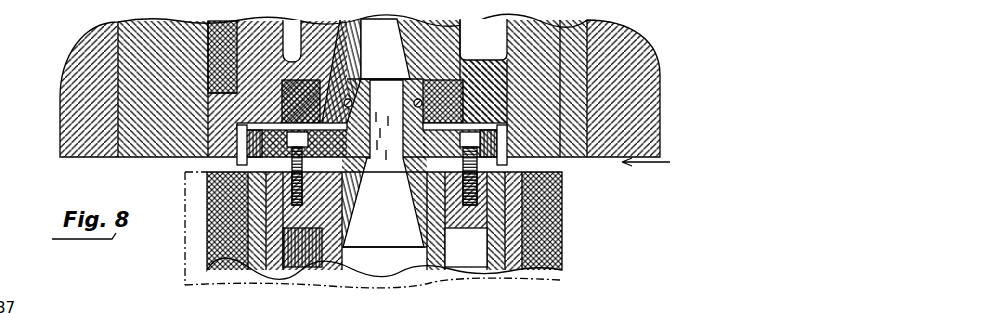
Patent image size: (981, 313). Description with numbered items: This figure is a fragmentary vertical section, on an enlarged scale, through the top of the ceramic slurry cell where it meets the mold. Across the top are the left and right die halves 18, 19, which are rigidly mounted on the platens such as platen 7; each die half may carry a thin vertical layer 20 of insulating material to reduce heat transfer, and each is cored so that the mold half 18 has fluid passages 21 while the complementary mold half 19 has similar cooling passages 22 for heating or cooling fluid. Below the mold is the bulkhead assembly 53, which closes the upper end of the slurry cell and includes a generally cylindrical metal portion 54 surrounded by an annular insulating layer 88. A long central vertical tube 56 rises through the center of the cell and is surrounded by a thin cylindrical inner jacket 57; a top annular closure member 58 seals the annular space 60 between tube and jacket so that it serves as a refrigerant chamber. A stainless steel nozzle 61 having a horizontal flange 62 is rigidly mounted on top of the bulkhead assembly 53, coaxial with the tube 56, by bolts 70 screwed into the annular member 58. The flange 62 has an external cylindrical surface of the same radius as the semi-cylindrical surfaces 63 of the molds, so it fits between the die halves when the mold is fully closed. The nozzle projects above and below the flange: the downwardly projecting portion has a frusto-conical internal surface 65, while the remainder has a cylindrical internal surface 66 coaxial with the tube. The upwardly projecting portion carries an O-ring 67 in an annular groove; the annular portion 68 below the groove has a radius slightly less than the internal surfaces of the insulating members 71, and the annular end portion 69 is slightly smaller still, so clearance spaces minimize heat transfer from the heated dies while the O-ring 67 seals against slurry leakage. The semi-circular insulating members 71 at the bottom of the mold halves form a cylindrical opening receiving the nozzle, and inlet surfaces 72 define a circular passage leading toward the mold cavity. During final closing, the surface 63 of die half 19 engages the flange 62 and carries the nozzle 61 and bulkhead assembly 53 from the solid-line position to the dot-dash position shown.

The platen 7 is at (68, 64).
The left die half 18 is at (247, 48).
The right die half 19 is at (528, 60).
The vertical layer of insulating material 20 is at (207, 67).
The fluid passages 21 is at (292, 46).
The cooling passages 22 is at (472, 49).
The bulkhead assembly 53 is at (182, 203).
The cylindrical metal portion 54 is at (238, 272).
The central vertical tube 56 is at (440, 272).
The inner jacket 57 is at (497, 273).
The top annular closure member 58 is at (466, 247).
The annular space 60 is at (310, 272).
The nozzle 61 is at (443, 128).
The horizontal flange 62 is at (503, 163).
The semi-cylindrical surfaces 63 is at (240, 135).
The frusto-conical internal surface 65 is at (384, 209).
The cylindrical internal surface 66 is at (384, 163).
The O-ring 67 is at (443, 101).
The annular portion of the nozzle 68 is at (301, 101).
The annular end portion 69 is at (412, 74).
The bolts 70 is at (293, 127).
The insulating members 71 is at (372, 80).
The inlet surfaces 72 is at (385, 60).
The annular insulating layer 88 is at (220, 247).